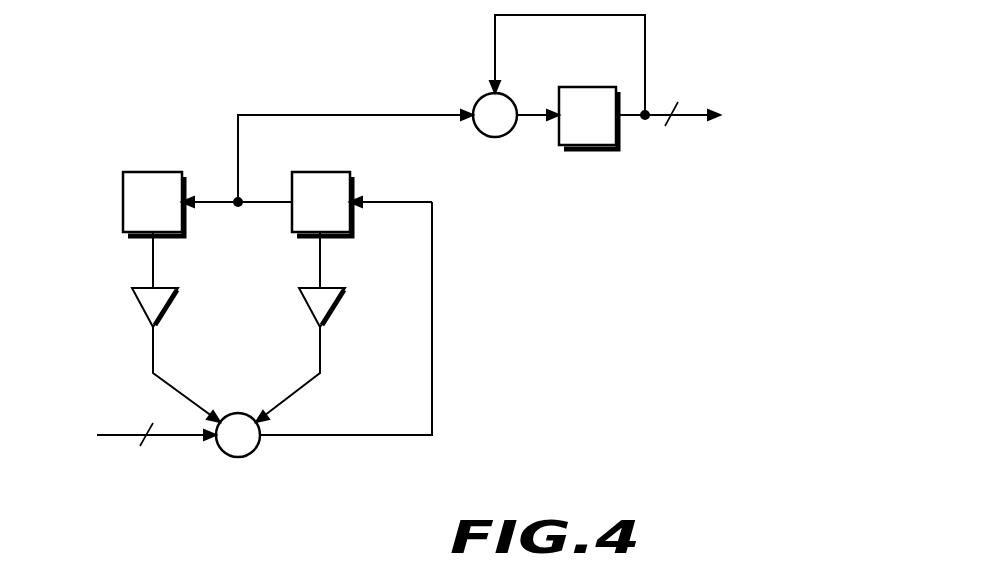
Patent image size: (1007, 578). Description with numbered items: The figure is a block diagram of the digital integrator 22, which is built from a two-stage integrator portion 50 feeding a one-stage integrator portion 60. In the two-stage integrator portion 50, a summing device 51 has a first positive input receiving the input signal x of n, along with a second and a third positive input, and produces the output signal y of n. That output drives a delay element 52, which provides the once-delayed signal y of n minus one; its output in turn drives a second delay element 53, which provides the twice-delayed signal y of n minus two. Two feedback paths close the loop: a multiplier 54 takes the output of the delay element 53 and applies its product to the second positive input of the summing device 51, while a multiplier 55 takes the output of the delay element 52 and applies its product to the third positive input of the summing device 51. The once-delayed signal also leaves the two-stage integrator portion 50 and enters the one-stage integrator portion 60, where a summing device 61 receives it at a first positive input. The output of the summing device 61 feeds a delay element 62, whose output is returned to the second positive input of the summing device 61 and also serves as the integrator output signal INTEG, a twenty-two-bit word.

The digital integrator 22 is at (545, 493).
The two-stage integrator portion 50 is at (260, 272).
The summing device 51 is at (254, 452).
The delay element 52 is at (316, 172).
The delay element 53 is at (148, 172).
The multiplier 54 is at (143, 303).
The multiplier 55 is at (312, 303).
The one-stage integrator portion 60 is at (550, 123).
The summing device 61 is at (495, 137).
The delay element 62 is at (600, 68).